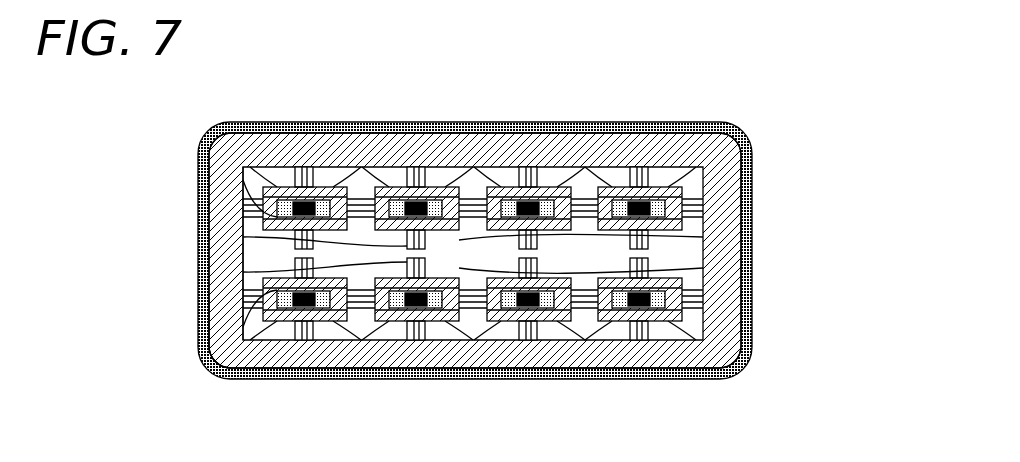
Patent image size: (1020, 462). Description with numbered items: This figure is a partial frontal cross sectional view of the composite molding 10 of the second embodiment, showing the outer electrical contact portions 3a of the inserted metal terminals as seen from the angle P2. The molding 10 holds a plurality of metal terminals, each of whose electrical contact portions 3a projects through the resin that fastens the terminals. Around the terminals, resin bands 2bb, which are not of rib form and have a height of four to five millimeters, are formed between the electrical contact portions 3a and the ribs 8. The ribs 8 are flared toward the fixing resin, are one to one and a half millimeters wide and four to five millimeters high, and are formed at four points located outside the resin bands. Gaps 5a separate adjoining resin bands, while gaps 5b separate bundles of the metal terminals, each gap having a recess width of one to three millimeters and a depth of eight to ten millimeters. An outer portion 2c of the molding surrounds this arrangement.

The viewing angle P2 is at (475, 236).
The composite molding 10 is at (200, 172).
The outer sealing layer 2c is at (752, 172).
The resin band 2bb is at (292, 127).
The electrical contact portion 3a is at (243, 182).
The gap 5a is at (206, 327).
The gap 5b is at (213, 366).
The rib 8 is at (200, 282).